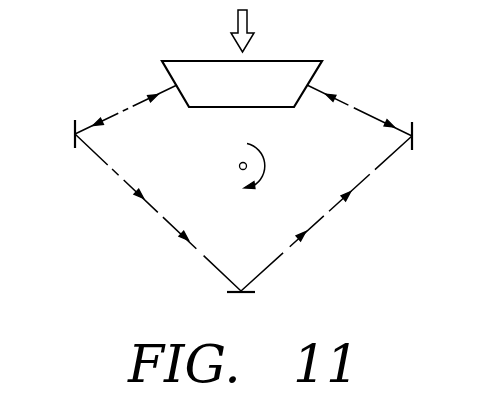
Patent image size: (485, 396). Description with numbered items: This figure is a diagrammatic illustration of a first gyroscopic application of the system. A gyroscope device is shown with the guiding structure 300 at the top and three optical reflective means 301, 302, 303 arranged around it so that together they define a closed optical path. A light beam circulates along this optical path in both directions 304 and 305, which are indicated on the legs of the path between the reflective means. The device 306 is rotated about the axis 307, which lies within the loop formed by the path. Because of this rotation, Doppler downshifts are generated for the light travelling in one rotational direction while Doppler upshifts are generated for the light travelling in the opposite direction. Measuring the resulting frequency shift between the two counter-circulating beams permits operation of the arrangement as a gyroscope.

The guiding structure 300 is at (218, 97).
The optical reflective means 301 is at (413, 124).
The optical reflective means 302 is at (255, 292).
The optical reflective means 303 is at (73, 122).
The first direction of light circulation 304 is at (137, 189).
The second direction of light circulation 305 is at (188, 243).
The device 306 is at (357, 97).
The axis 307 is at (241, 161).